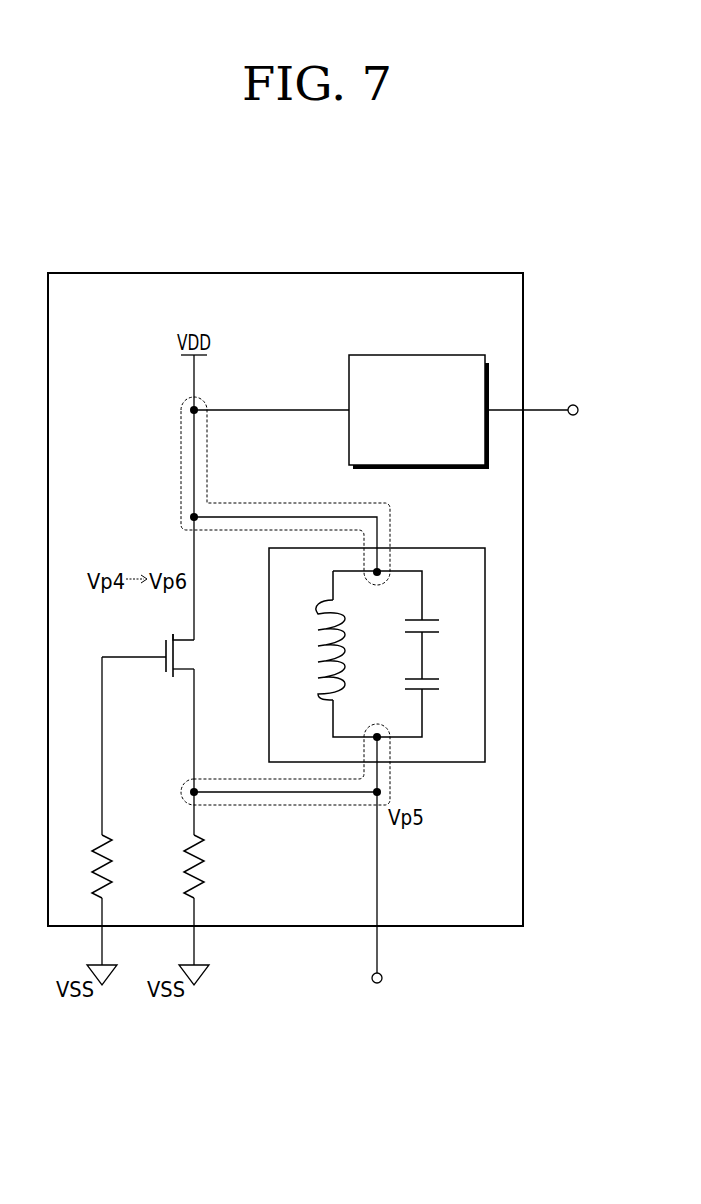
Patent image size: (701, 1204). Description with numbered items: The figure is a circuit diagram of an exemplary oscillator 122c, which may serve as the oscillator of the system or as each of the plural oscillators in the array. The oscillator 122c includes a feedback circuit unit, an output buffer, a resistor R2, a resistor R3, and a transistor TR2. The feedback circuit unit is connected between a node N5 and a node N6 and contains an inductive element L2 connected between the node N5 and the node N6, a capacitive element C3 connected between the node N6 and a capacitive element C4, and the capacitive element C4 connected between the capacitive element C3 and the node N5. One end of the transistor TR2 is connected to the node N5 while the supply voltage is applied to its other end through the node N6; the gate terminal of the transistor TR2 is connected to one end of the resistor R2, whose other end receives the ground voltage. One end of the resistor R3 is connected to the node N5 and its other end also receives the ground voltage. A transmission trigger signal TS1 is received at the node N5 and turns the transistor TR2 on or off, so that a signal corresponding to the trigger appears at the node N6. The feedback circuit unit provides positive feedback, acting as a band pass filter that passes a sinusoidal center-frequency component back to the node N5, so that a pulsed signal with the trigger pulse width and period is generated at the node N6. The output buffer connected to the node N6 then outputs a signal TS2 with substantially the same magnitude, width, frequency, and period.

The oscillator 122c is at (314, 272).
The node N6 is at (272, 503).
The node N5 is at (275, 806).
The transistor TR2 is at (168, 655).
The resistor R2 is at (118, 866).
The resistor R3 is at (210, 866).
The inductive element L2 is at (315, 650).
The capacitive element C3 is at (438, 628).
The capacitive element C4 is at (438, 687).
The transmission trigger signal TS1 is at (377, 876).
The signal TS2 is at (553, 410).